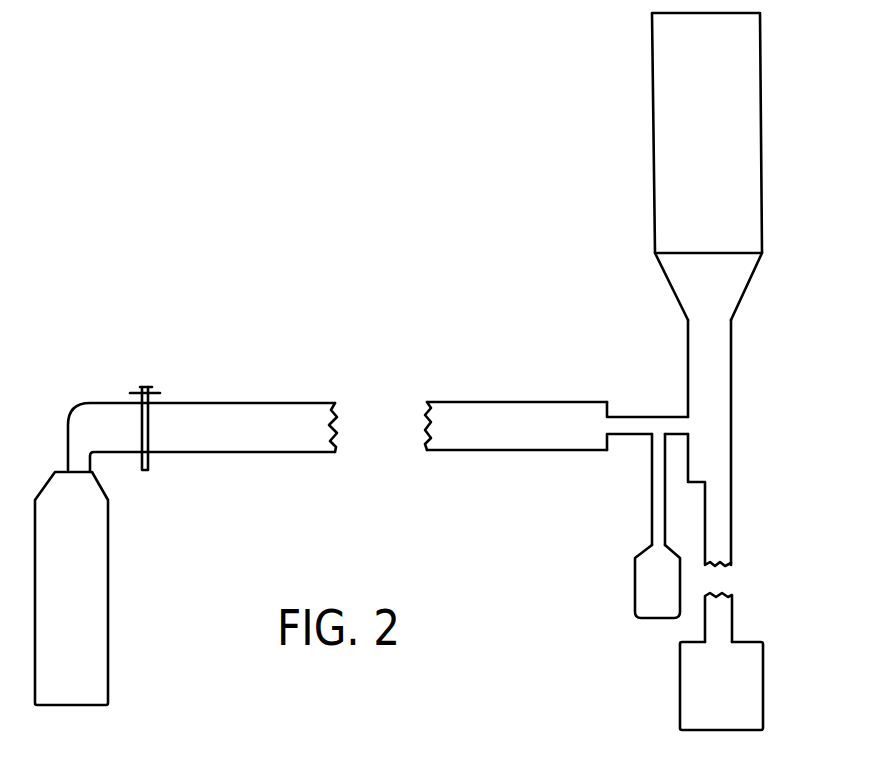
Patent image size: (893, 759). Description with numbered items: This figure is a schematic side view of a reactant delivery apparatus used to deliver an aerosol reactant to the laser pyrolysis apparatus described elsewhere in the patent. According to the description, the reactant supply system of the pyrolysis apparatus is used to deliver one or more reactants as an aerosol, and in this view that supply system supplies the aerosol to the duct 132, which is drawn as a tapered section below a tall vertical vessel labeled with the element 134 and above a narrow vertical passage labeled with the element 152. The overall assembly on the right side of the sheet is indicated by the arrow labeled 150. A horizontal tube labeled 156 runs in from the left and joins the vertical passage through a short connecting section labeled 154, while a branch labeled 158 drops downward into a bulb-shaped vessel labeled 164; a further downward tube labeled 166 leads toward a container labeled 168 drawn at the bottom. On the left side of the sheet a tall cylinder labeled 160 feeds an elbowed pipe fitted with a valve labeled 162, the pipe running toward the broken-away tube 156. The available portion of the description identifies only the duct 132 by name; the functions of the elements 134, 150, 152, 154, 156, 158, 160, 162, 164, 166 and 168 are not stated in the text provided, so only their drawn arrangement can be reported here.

The hopper 134 is at (683, 130).
The duct 132 is at (675, 283).
The feed tube 152 is at (718, 345).
The feed system 150 is at (756, 408).
The connecting passage 154 is at (641, 415).
The supply tube 156 is at (488, 413).
The branch tube 158 is at (657, 475).
The collection vessel 164 is at (642, 582).
The outlet tube 166 is at (720, 522).
The collection container 168 is at (752, 654).
The gas cylinder 160 is at (87, 535).
The valve 162 is at (147, 422).